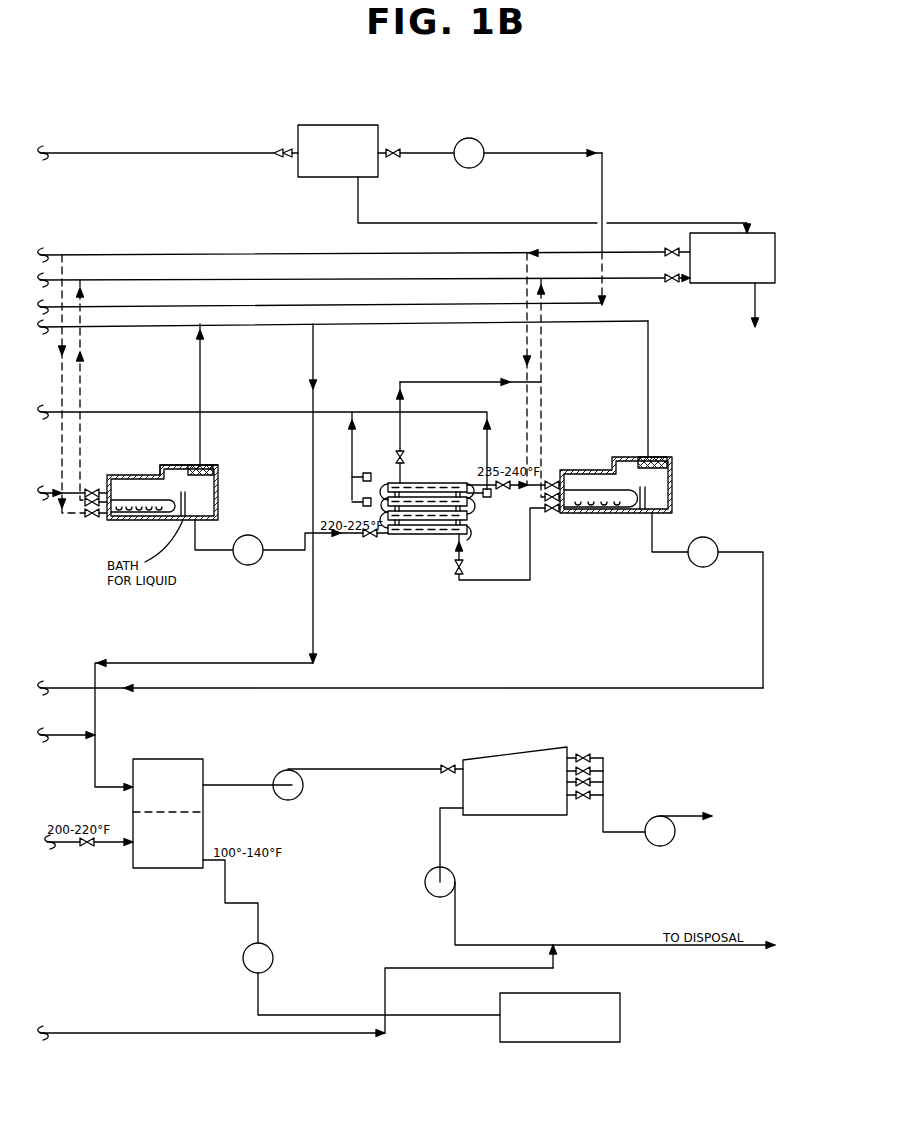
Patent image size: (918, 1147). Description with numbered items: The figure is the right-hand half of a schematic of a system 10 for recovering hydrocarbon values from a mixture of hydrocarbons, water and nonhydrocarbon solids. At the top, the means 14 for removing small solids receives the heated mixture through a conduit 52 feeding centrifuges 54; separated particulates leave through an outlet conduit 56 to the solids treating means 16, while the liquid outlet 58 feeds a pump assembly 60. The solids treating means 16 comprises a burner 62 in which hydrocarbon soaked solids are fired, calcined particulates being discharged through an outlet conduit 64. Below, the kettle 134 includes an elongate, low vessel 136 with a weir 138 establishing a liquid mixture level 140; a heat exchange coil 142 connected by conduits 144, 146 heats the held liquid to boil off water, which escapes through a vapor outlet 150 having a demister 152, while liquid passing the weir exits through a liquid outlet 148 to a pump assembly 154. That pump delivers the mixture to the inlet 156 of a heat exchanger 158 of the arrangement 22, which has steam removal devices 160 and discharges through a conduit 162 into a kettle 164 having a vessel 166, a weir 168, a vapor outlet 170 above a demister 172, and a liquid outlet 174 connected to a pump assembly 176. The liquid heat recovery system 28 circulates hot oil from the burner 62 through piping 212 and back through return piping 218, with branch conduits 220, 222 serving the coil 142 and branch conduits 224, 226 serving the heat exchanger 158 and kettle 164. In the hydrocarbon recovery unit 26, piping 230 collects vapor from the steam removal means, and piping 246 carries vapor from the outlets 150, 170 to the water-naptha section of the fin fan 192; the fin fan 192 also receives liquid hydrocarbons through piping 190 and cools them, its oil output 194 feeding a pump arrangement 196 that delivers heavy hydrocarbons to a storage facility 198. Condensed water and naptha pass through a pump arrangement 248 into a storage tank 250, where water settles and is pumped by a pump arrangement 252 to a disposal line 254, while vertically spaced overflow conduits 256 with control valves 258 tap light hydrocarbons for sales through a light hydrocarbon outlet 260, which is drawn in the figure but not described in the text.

The system 10 is at (615, 123).
The means for removing small solids 14 is at (280, 126).
The solids treating means 16 is at (703, 186).
The heat exchanger-kettle reboiler arrangement 22 is at (552, 413).
The hydrocarbon recovery unit 26 is at (443, 740).
The liquid heat recovery system 28 is at (198, 233).
The conduit 52 is at (132, 153).
The centrifuges 54 is at (316, 125).
The outlet conduit 56 is at (358, 201).
The liquid outlet 58 is at (388, 150).
The pump assembly 60 is at (481, 149).
The burner 62 is at (752, 233).
The outlet conduit 64 is at (757, 306).
The kettle 134 is at (171, 445).
The vessel 136 is at (218, 492).
The weir 138 is at (187, 505).
The liquid mixture level 140 is at (165, 492).
The heat exchange coil 142 is at (167, 514).
The conduit 144 is at (80, 518).
The conduit 146 is at (78, 455).
The liquid outlet 148 is at (197, 535).
The vapor outlet 150 is at (200, 464).
The demister 152 is at (213, 466).
The pump assembly 154 is at (253, 538).
The inlet 156 is at (383, 540).
The heat exchanger 158 is at (409, 470).
The steam removal devices 160 is at (392, 432).
The conduit 162 is at (478, 485).
The kettle 164 is at (562, 455).
The vessel 166 is at (672, 495).
The weir 168 is at (645, 492).
The vapor outlet 170 is at (649, 382).
The demister 172 is at (652, 457).
The liquid outlet 174 is at (652, 542).
The pump assembly 176 is at (715, 551).
The piping 190 is at (100, 848).
The fin fan 192 is at (198, 748).
The oil output 194 is at (227, 885).
The pump arrangement 196 is at (260, 956).
The storage facility 198 is at (563, 993).
The piping 212 is at (72, 255).
The piping 218 is at (130, 280).
The branch conduit 220 is at (63, 396).
The branch conduit 222 is at (82, 345).
The branch conduit 224 is at (523, 346).
The branch conduit 226 is at (543, 349).
The piping 230 is at (222, 412).
The piping 246 is at (212, 307).
The pump arrangement 248 is at (287, 772).
The storage tank 250 is at (467, 760).
The pump arrangement 252 is at (448, 876).
The disposal line 254 is at (580, 945).
The overflow conduits 256 is at (582, 756).
The control valves 258 is at (585, 800).
The flow meter 260 is at (656, 819).